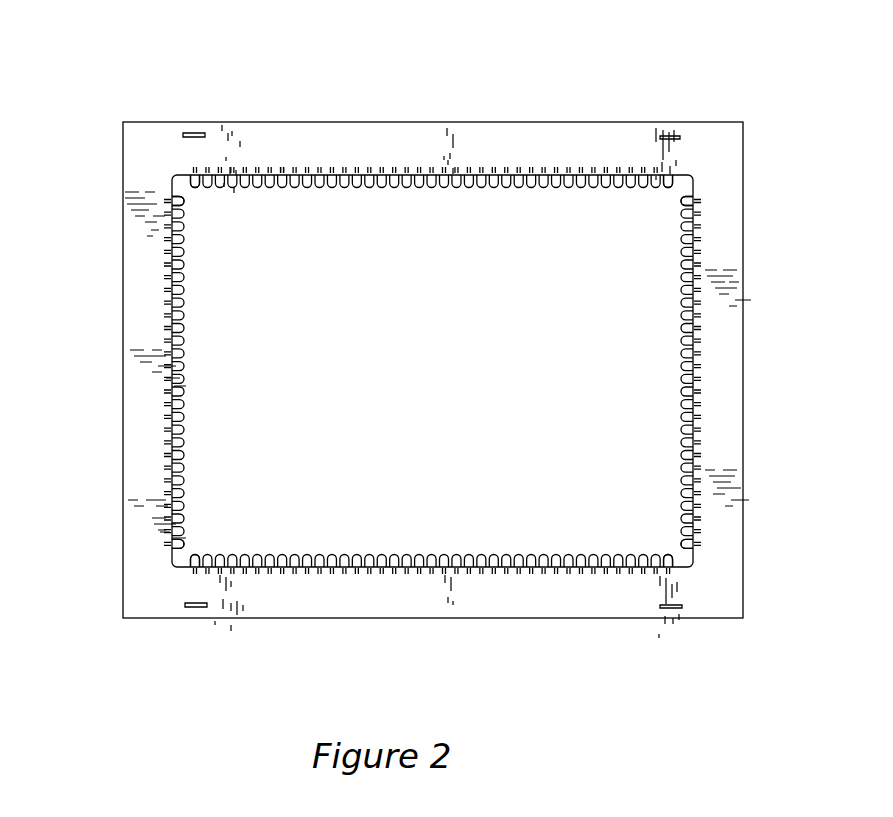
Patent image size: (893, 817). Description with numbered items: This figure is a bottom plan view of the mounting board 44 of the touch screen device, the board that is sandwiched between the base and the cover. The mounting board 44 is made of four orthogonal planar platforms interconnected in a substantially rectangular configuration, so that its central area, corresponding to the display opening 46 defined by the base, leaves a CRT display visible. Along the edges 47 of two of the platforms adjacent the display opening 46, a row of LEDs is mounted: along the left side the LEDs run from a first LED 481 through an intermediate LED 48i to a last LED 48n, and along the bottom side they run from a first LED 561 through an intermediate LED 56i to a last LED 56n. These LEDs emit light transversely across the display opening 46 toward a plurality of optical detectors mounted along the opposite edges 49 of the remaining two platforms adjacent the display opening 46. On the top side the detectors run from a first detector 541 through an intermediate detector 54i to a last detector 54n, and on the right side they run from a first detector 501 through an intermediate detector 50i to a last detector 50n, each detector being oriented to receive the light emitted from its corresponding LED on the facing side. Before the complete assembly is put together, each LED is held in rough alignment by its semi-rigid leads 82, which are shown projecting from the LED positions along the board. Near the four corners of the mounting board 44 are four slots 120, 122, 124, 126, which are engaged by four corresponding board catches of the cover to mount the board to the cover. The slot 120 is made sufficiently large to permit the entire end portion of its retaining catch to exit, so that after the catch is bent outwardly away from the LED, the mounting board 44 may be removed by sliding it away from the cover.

The mounting board 44 is at (743, 432).
The display opening 46 is at (220, 510).
The edges 47 is at (485, 168).
The opposite edges 49 is at (693, 375).
The semi-rigid leads 82 is at (280, 167).
The optical detector 541 is at (190, 175).
The optical detector 54i is at (345, 167).
The optical detector 54n is at (668, 173).
The LED 561 is at (193, 567).
The LED 56i is at (396, 568).
The LED 56n is at (668, 568).
The LED 481 is at (167, 200).
The LED 48i is at (167, 353).
The LED 48n is at (172, 549).
The optical detector 501 is at (697, 200).
The optical detector 50i is at (693, 320).
The optical detector 50n is at (697, 545).
The slot 120 is at (192, 607).
The slot 122 is at (677, 608).
The slot 124 is at (190, 133).
The slot 126 is at (674, 136).